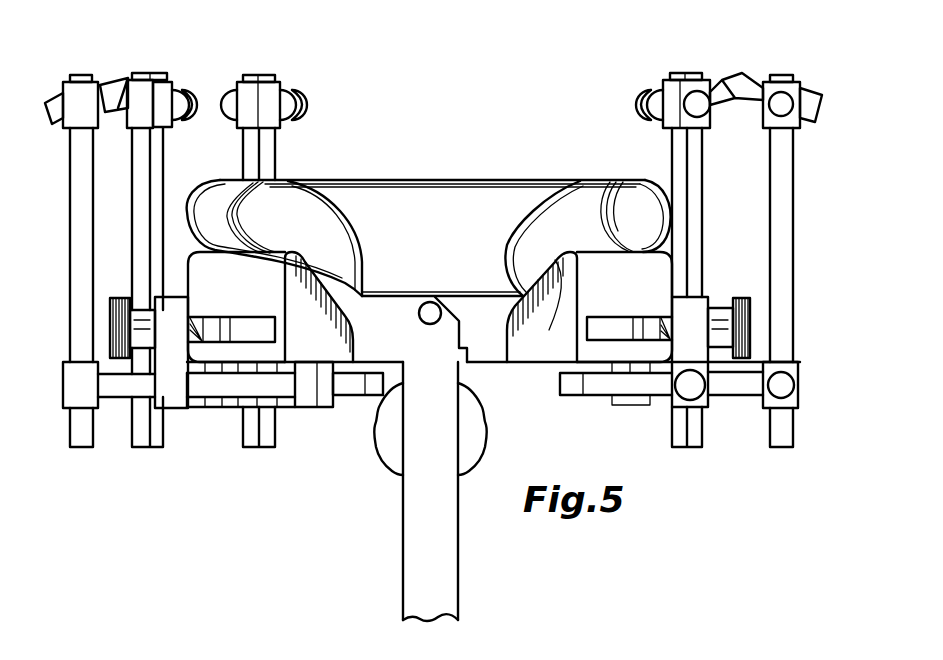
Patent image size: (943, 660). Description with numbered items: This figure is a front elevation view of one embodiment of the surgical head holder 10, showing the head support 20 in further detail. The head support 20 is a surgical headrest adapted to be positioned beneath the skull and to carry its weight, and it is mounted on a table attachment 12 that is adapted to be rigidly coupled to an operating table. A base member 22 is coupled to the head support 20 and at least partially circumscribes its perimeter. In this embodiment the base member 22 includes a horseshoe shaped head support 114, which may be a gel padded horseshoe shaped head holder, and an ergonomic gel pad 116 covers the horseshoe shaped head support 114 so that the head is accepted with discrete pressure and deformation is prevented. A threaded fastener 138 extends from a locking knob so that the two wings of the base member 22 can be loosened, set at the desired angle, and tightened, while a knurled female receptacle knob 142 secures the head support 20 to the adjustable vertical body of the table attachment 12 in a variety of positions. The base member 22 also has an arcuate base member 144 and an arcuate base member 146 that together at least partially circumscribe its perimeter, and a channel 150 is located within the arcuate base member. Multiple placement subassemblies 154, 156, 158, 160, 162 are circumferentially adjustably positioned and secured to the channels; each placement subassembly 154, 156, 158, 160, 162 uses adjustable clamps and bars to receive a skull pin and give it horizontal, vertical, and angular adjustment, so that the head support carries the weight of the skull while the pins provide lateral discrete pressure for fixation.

The surgical head holder 10 is at (410, 103).
The table attachment 12 is at (413, 551).
The head support 20 is at (477, 177).
The base member 22 is at (672, 282).
The horseshoe shaped head support 114 is at (549, 330).
The ergonomic gel pad 116 is at (377, 187).
The threaded fastener 138 is at (429, 302).
The knurled female receptacle knob 142 is at (378, 433).
The arcuate base member 144 is at (297, 347).
The arcuate base member 146 is at (567, 347).
The channel 150 is at (430, 384).
The placement subassembly 154 is at (142, 75).
The placement subassembly 156 is at (80, 75).
The placement subassembly 158 is at (255, 75).
The placement subassembly 160 is at (783, 72).
The placement subassembly 162 is at (695, 72).